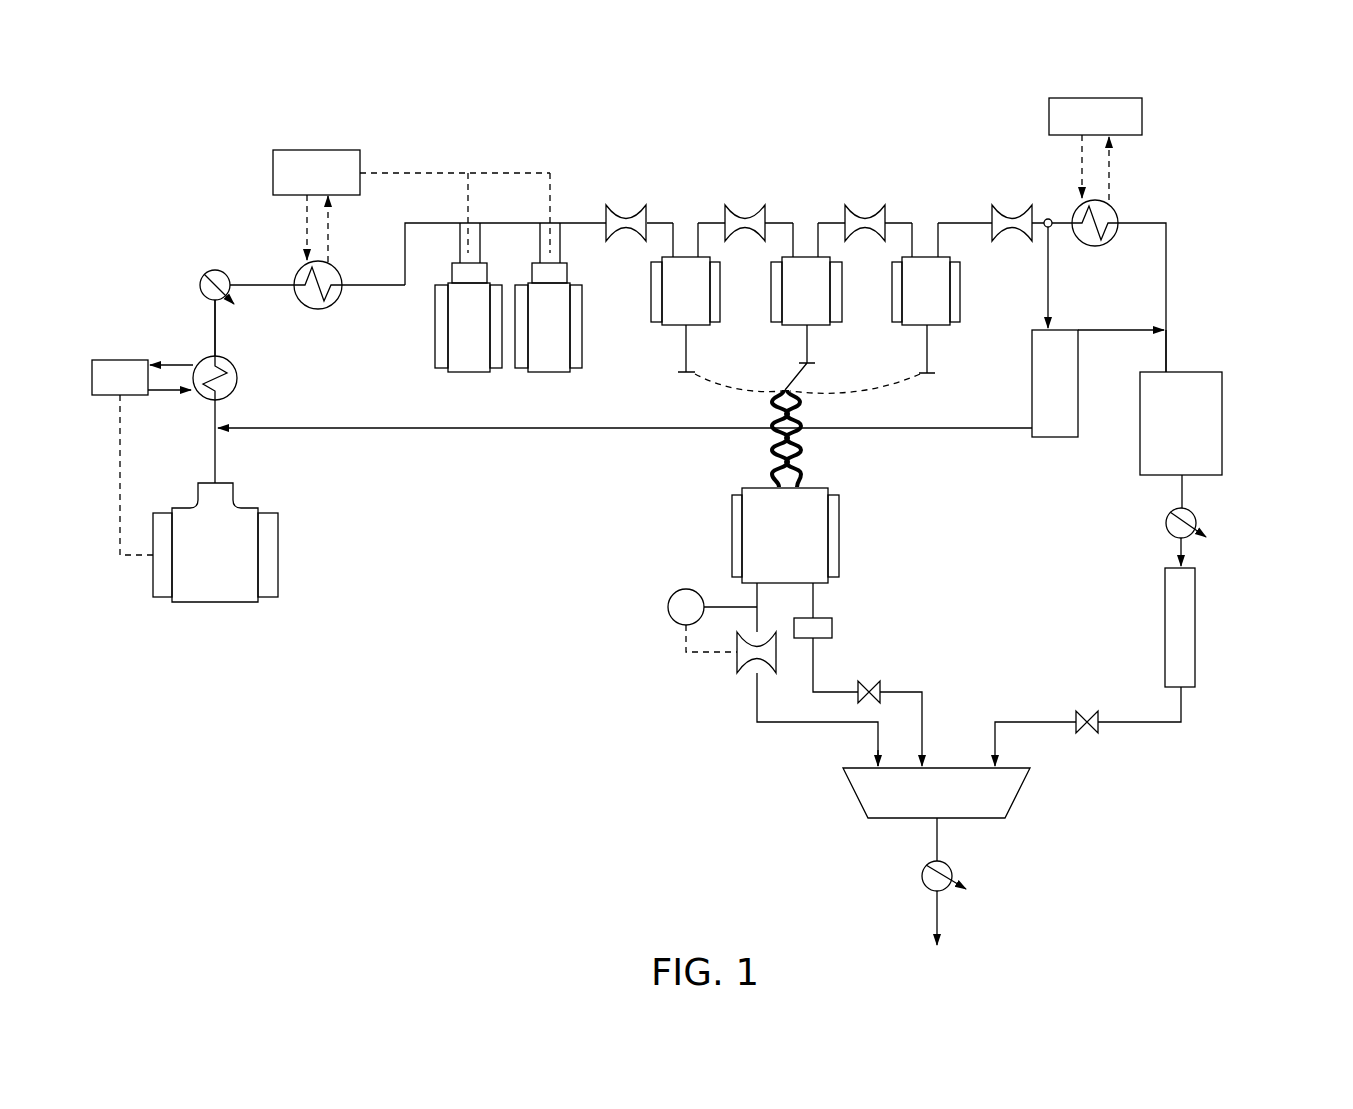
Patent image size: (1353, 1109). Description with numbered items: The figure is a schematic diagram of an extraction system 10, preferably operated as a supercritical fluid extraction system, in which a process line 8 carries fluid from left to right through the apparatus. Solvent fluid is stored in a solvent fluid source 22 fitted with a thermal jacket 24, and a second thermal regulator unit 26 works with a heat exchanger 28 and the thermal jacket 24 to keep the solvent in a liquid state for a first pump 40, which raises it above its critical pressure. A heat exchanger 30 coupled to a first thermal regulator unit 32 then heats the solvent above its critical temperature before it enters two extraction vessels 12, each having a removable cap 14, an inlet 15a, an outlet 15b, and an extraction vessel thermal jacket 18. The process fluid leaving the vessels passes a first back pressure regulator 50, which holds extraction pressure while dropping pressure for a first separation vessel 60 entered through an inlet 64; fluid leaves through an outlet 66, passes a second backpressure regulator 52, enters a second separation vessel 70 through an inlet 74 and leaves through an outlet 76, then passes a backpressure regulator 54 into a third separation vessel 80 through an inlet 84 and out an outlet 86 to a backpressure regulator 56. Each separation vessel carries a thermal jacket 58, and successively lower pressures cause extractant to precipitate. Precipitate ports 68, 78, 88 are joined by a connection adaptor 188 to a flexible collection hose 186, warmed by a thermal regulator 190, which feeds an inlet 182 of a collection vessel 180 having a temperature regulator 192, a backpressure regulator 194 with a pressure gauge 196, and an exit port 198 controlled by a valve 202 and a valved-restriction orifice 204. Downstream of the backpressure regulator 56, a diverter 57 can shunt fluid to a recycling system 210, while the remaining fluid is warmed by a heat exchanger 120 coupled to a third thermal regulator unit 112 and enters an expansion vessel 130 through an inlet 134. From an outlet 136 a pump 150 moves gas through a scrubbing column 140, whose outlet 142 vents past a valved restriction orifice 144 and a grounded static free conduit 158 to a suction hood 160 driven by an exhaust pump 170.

The process line 8 is at (215, 338).
The extraction system 10 is at (215, 95).
The extraction vessel 12 is at (468, 377).
The removable cap 14 is at (452, 270).
The inlet 15a is at (458, 245).
The outlet 15b is at (480, 228).
The extraction vessel thermal jacket 18 is at (440, 355).
The solvent fluid source 22 is at (223, 606).
The thermal jacket 24 is at (278, 535).
The second thermal regulator unit 26 is at (92, 396).
The heat exchanger 28 is at (237, 378).
The heat exchanger 30 is at (300, 303).
The first thermal regulator unit 32 is at (313, 150).
The first pump 40 is at (218, 270).
The first back pressure regulator 50 is at (620, 205).
The second backpressure regulator 52 is at (740, 205).
The backpressure regulator 54 is at (860, 205).
The backpressure regulator 56 is at (1005, 205).
The diverter 57 is at (1048, 218).
The thermal jacket 58 is at (654, 298).
The first separation vessel 60 is at (668, 330).
The inlet 64 is at (673, 238).
The outlet 66 is at (700, 247).
The precipitate port 68 is at (688, 372).
The second separation vessel 70 is at (780, 330).
The inlet 74 is at (793, 238).
The outlet 76 is at (822, 247).
The precipitate port 78 is at (810, 365).
The third separation vessel 80 is at (900, 330).
The inlet 84 is at (915, 238).
The outlet 86 is at (942, 247).
The precipitate port 88 is at (930, 372).
The third thermal regulator unit 112 is at (1142, 112).
The heat exchanger 120 is at (1095, 247).
The expansion vessel 130 is at (1222, 422).
The inlet 134 is at (1166, 357).
The outlet 136 is at (1183, 488).
The scrubbing column 140 is at (1187, 632).
The outlet 142 is at (1185, 690).
The valved restriction orifice 144 is at (1090, 735).
The pump 150 is at (1166, 513).
The static free conduit 158 is at (1013, 722).
The suction hood 160 is at (992, 808).
The exhaust pump 170 is at (953, 870).
The collection vessel 180 is at (835, 520).
The inlet 182 is at (800, 475).
The flexible collection hose 186 is at (757, 435).
The connection adaptor 188 is at (775, 393).
The thermal regulator 190 is at (800, 420).
The temperature regulator 192 is at (735, 505).
The backpressure regulator 194 is at (737, 655).
The pressure gauge 196 is at (720, 607).
The exit port 198 is at (818, 598).
The valve 202 is at (835, 628).
The valved-restriction orifice 204 is at (875, 690).
The recycling system 210 is at (1053, 442).